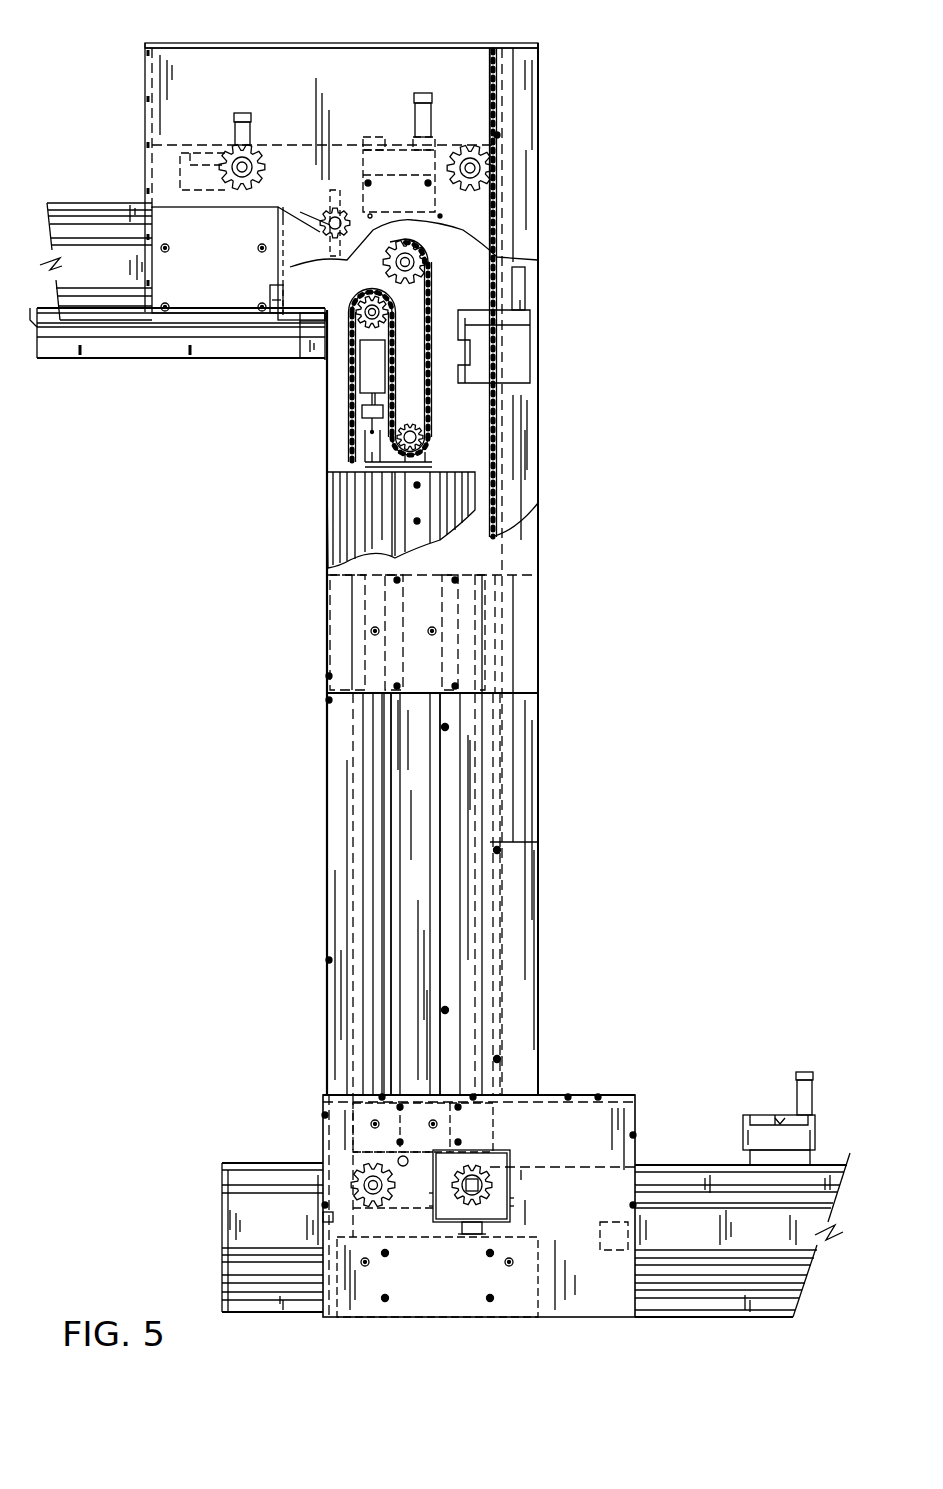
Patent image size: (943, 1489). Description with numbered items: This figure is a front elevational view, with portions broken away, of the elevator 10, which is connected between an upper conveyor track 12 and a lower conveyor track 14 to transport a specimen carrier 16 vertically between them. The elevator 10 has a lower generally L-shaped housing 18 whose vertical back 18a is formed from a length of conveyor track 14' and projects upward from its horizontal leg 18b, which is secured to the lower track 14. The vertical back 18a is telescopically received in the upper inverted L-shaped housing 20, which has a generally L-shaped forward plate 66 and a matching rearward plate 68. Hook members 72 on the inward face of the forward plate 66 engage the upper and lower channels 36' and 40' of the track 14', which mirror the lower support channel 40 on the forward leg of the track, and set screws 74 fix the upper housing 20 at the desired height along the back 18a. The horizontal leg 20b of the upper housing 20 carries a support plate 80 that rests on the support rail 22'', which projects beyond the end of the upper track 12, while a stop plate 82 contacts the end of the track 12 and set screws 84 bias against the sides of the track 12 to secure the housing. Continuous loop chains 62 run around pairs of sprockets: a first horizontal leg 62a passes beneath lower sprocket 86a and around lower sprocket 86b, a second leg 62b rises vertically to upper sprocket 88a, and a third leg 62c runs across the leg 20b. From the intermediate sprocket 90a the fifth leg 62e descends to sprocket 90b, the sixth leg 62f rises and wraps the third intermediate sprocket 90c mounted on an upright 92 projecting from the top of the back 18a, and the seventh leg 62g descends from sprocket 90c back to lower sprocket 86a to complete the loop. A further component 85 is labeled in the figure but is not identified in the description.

The elevator 10 is at (732, 335).
The upper conveyor track 12 is at (115, 288).
The lower conveyor track 14 is at (536, 1255).
The conveyor track 14' is at (320, 894).
The specimen carrier 16 is at (780, 1133).
The lower L-shaped housing 18 is at (552, 1066).
The vertical back of lower housing 18a is at (328, 726).
The horizontal leg of lower housing 18b is at (577, 1115).
The upper inverted L-shaped housing 20 is at (562, 223).
The horizontal leg of upper housing 20b is at (345, 60).
The support rail 22'' is at (177, 366).
The upper support channel 36' is at (351, 783).
The lower support channel 40 is at (368, 520).
The lower support channel 40' is at (350, 894).
The continuous loop chain 62 is at (508, 480).
The lower chain mounting plate 62a is at (410, 1207).
The second leg of chain 62b is at (493, 958).
The third leg of chain 62c is at (343, 142).
The fifth leg of chain 62e is at (430, 355).
The sixth leg of chain 62f is at (523, 333).
The seventh leg of chain 62g is at (353, 945).
The forward plate 66 is at (460, 93).
The rearward plate 68 is at (515, 445).
The hook members 72 is at (442, 665).
The set screws 74 is at (432, 630).
The support plate 80 is at (310, 330).
The stop plate 82 is at (295, 317).
The set screws 84 is at (160, 305).
The drive sprocket 85 is at (262, 150).
The lower sprocket 86a is at (353, 1178).
The lower sprocket 86b is at (495, 1180).
The upper sprocket 88a is at (490, 160).
The intermediate sprocket 90a is at (430, 282).
The intermediate sprocket 90b is at (435, 423).
The third intermediate sprocket 90c is at (352, 383).
The upright 92 is at (368, 385).